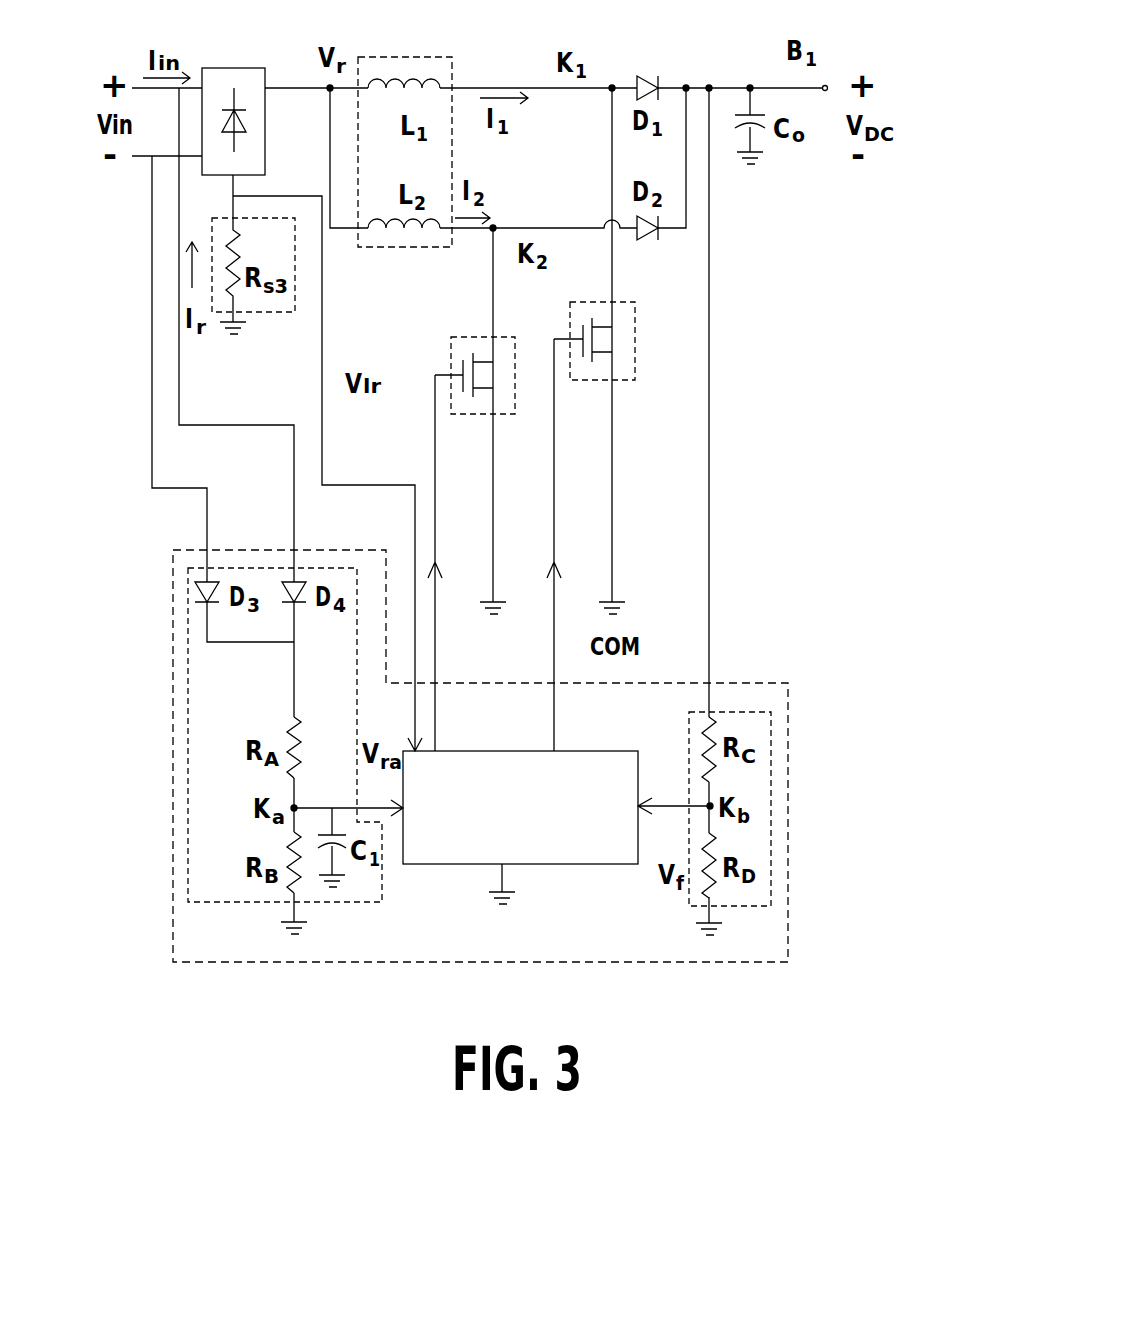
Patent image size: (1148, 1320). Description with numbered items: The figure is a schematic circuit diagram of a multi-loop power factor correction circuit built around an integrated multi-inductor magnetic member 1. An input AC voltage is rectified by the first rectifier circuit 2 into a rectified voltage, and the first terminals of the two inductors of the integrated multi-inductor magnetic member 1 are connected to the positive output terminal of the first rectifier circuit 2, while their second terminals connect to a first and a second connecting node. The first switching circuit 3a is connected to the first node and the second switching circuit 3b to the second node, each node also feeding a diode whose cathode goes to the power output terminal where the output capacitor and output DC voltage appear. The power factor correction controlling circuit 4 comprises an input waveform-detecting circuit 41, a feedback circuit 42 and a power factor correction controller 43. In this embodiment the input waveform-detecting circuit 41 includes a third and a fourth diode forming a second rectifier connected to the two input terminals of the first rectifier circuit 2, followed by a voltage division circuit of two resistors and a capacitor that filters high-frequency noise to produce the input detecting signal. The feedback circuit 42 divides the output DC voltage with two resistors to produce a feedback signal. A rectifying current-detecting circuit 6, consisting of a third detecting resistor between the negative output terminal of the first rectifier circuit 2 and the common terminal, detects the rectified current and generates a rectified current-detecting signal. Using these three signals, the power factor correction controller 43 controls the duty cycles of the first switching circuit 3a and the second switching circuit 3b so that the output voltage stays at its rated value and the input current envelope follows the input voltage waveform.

The integrated multi-inductor magnetic member 1 is at (405, 57).
The first rectifier circuit 2 is at (233, 67).
The first switching circuit 3a is at (635, 347).
The second switching circuit 3b is at (451, 350).
The power factor correction controlling circuit 4 is at (788, 822).
The input waveform-detecting circuit 41 is at (217, 902).
The feedback circuit 42 is at (772, 753).
The power factor correction controller 43 is at (560, 865).
The rectifying current-detecting circuit 6 is at (275, 312).